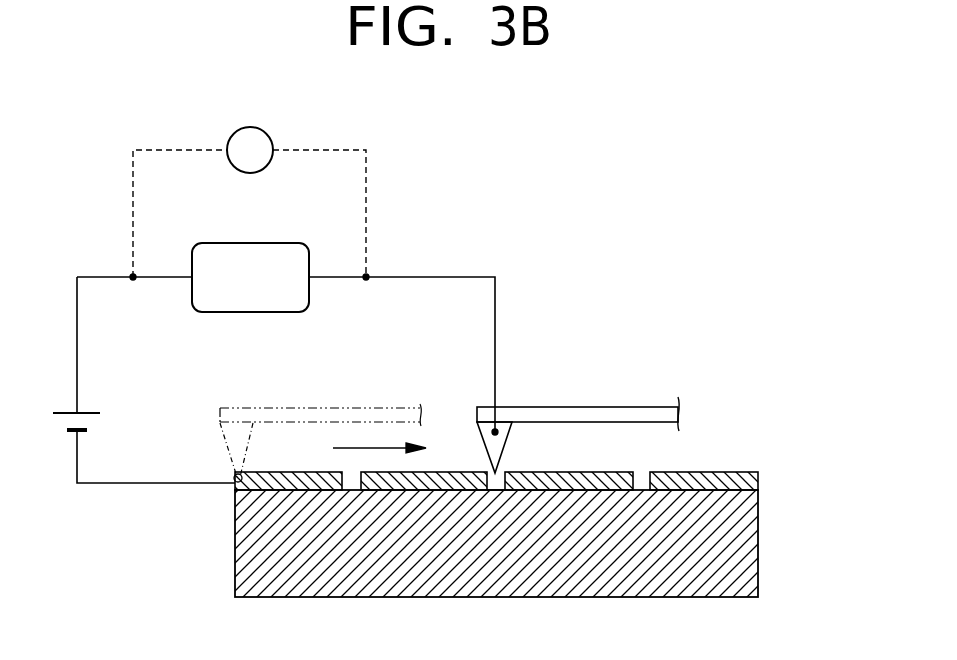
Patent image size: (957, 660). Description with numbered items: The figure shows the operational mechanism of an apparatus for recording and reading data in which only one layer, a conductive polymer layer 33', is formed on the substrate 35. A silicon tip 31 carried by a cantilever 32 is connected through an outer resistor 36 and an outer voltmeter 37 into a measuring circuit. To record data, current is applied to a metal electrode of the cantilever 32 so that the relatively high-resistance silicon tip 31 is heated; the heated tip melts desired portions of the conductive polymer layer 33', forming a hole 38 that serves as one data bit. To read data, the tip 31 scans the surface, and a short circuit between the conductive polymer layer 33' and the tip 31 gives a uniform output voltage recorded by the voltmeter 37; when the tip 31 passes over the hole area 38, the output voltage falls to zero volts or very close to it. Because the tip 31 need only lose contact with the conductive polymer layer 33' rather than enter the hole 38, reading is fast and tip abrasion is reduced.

The silicon tip 31 is at (502, 443).
The cantilever 32 is at (585, 407).
The conductive polymer layer 33' is at (535, 477).
The substrate 35 is at (743, 548).
The outer resistor 36 is at (251, 312).
The outer voltmeter 37 is at (234, 135).
The hole 38 is at (485, 482).